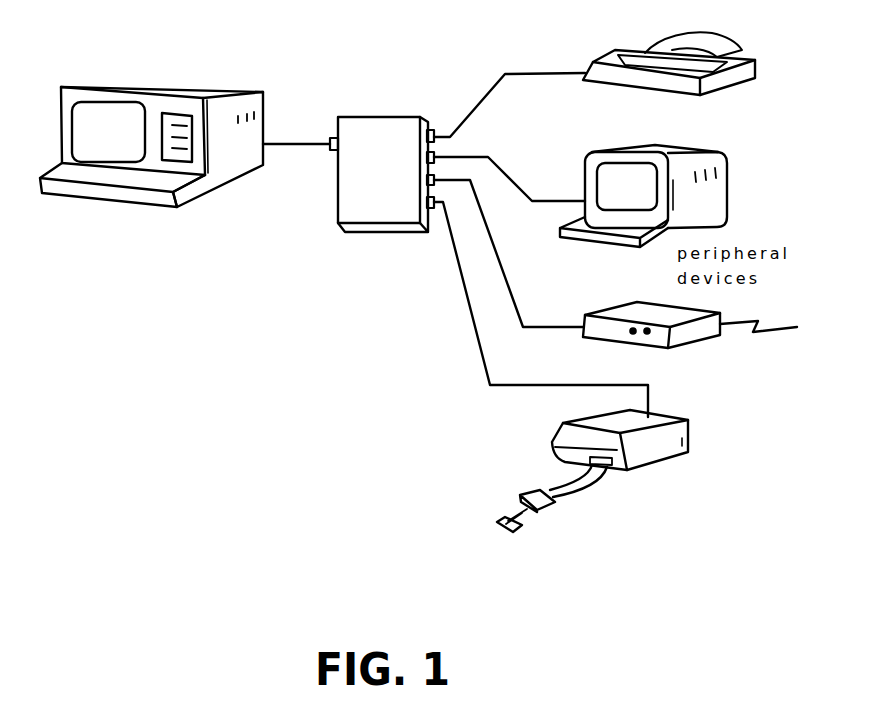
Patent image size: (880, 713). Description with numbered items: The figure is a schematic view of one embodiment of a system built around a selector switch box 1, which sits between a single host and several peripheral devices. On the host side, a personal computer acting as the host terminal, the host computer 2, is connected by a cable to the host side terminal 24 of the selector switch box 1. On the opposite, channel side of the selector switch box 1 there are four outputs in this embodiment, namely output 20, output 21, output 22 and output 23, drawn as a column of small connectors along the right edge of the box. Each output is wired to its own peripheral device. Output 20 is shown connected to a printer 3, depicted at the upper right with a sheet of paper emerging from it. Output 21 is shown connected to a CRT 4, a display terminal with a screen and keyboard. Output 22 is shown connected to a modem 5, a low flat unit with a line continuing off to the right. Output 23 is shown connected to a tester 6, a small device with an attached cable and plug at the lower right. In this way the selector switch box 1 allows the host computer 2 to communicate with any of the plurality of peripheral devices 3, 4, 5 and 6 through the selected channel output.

The selector switch box 1 is at (375, 117).
The host computer 2 is at (182, 87).
The printer 3 is at (615, 50).
The CRT 4 is at (620, 150).
The modem 5 is at (607, 305).
The tester 6 is at (688, 425).
The output 20 is at (433, 130).
The output 21 is at (434, 154).
The output 22 is at (434, 184).
The output 23 is at (433, 208).
The host side terminal 24 is at (331, 150).